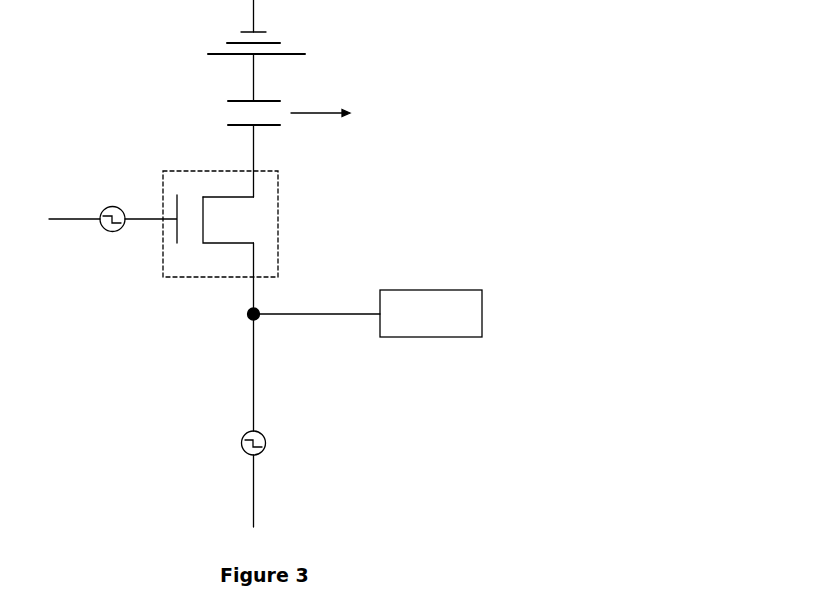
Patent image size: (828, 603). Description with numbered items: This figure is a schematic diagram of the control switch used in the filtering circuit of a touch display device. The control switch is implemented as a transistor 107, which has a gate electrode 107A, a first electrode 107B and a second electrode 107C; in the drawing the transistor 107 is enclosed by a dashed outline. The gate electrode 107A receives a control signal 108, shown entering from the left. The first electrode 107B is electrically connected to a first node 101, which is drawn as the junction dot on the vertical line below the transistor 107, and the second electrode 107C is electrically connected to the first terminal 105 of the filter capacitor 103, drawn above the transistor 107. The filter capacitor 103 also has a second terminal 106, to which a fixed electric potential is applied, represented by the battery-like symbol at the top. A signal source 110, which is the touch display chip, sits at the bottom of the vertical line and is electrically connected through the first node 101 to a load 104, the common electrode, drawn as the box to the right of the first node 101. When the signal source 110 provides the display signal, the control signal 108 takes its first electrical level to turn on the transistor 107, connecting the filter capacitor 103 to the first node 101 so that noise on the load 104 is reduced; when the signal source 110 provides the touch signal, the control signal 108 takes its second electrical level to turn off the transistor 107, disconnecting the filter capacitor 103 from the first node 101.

The first node 101 is at (253, 322).
The filter capacitor 103 is at (343, 113).
The load 104 is at (403, 290).
The first terminal 105 is at (240, 126).
The second terminal 106 is at (240, 100).
The transistor 107 is at (224, 236).
The gate electrode 107A is at (177, 232).
The first electrode 107B is at (226, 251).
The second electrode 107C is at (232, 197).
The control signal 108 is at (110, 206).
The signal source 110 is at (251, 456).